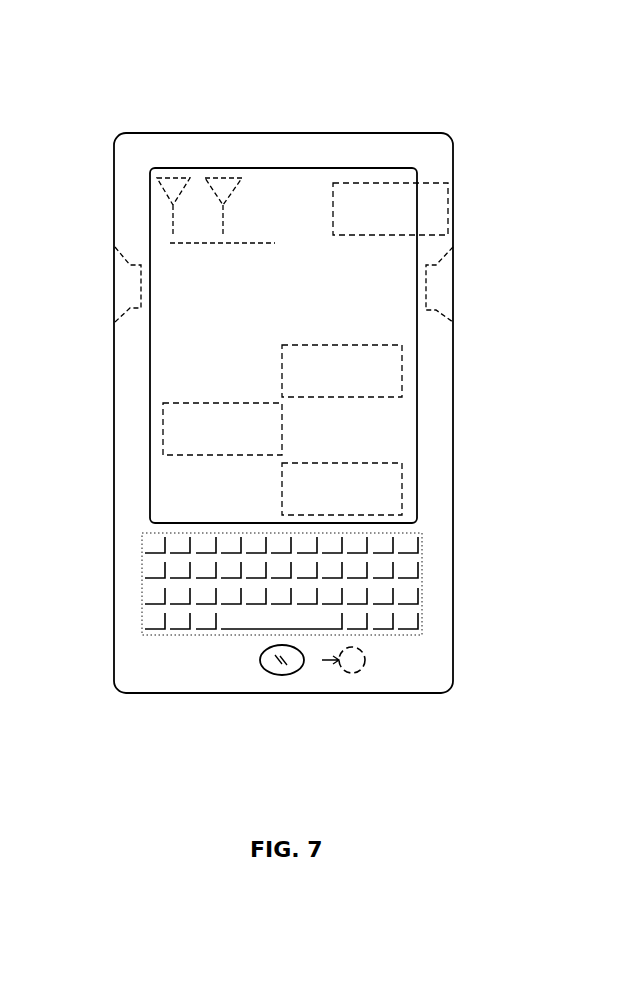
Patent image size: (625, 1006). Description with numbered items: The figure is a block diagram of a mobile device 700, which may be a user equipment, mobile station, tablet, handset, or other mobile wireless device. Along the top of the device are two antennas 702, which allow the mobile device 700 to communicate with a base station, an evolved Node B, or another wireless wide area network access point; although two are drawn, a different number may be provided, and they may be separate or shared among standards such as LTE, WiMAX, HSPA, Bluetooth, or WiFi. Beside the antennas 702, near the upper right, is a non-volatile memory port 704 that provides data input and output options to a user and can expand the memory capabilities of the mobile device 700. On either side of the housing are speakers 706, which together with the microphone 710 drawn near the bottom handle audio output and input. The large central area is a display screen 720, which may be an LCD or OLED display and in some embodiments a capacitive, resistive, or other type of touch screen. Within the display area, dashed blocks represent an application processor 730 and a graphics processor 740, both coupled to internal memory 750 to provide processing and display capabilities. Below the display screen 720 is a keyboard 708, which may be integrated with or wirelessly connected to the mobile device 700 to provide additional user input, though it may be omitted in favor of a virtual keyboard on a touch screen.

The mobile device 700 is at (238, 51).
The antennas 702 is at (225, 176).
The non-volatile memory port 704 is at (478, 200).
The speakers 706 is at (118, 290).
The keyboard 708 is at (423, 590).
The microphone 710 is at (346, 674).
The display screen 720 is at (283, 345).
The application processor 730 is at (342, 371).
The graphics processor 740 is at (222, 429).
The internal memory 750 is at (342, 489).